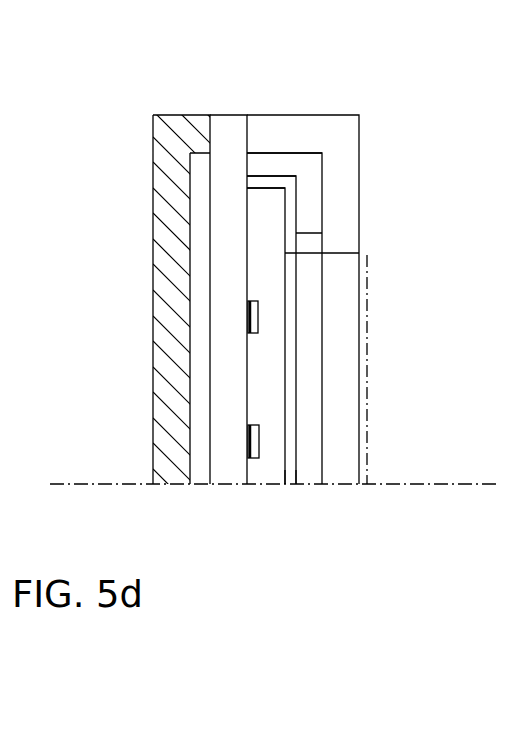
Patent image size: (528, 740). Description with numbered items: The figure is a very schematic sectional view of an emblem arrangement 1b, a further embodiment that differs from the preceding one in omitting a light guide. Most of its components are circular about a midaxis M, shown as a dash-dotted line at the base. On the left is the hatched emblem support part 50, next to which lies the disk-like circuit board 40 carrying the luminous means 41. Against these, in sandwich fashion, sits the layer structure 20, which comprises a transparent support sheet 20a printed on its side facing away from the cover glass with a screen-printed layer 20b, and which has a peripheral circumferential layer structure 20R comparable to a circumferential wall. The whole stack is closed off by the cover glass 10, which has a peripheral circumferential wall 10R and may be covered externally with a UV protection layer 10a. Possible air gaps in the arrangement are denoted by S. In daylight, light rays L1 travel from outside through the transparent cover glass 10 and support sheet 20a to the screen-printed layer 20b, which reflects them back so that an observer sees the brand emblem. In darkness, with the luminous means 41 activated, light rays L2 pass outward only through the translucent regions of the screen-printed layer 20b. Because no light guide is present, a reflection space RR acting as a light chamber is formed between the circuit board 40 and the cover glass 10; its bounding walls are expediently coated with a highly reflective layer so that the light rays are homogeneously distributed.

The emblem arrangement 1b is at (397, 210).
The cover glass 10 is at (343, 478).
The UV protection layer 10a is at (367, 452).
The peripheral circumferential wall 10R is at (293, 133).
The layer structure 20 is at (303, 227).
The transparent support sheet 20a is at (309, 478).
The screen-printed layer 20b is at (290, 478).
The peripheral circumferential layer structure 20R is at (260, 183).
The circuit board 40 is at (228, 478).
The luminous means 41 is at (253, 442).
The emblem support part 50 is at (170, 478).
The reflection space RR is at (278, 205).
The air gaps S is at (200, 292).
The light rays L1 is at (298, 289).
The light rays L2 is at (257, 317).
The midaxis M is at (475, 484).